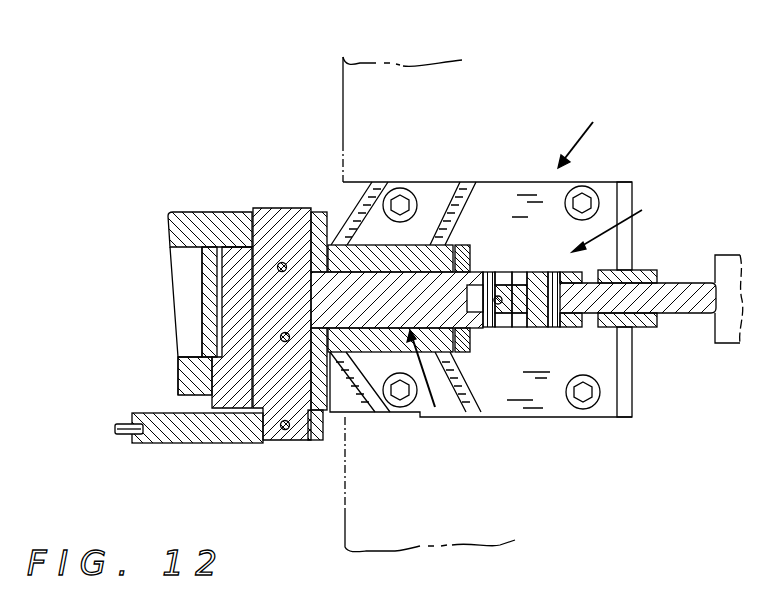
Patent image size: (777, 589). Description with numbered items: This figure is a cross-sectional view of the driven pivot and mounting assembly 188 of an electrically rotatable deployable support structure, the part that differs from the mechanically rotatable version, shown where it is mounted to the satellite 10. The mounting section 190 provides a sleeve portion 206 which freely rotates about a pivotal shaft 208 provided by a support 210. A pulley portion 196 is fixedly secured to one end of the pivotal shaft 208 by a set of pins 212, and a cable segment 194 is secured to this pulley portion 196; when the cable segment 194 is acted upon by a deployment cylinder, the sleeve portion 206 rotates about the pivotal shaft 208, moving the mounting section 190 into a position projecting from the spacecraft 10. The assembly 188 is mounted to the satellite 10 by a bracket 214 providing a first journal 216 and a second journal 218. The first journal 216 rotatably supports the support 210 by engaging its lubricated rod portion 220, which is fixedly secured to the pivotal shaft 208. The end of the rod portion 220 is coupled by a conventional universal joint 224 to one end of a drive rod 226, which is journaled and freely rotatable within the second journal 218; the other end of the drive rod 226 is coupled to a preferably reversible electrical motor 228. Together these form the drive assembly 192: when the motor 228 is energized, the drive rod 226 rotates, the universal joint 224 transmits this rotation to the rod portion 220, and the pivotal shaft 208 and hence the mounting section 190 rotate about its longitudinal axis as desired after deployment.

The satellite 10 is at (380, 63).
The driven pivot and mounting assembly 188 is at (509, 258).
The mounting section 190 is at (178, 213).
The drive assembly 192 is at (630, 299).
The cable segment 194 is at (118, 423).
The pulley portion 196 is at (178, 445).
The sleeve portion 206 is at (247, 212).
The pivotal shaft 208 is at (300, 210).
The support 210 is at (432, 386).
The pins 212 is at (282, 262).
The bracket 214 is at (494, 182).
The first journal 216 is at (403, 241).
The second journal 218 is at (662, 335).
The rod portion 220 is at (404, 310).
The universal joint 224 is at (534, 328).
The drive rod 226 is at (599, 299).
The electrical motor 228 is at (722, 253).